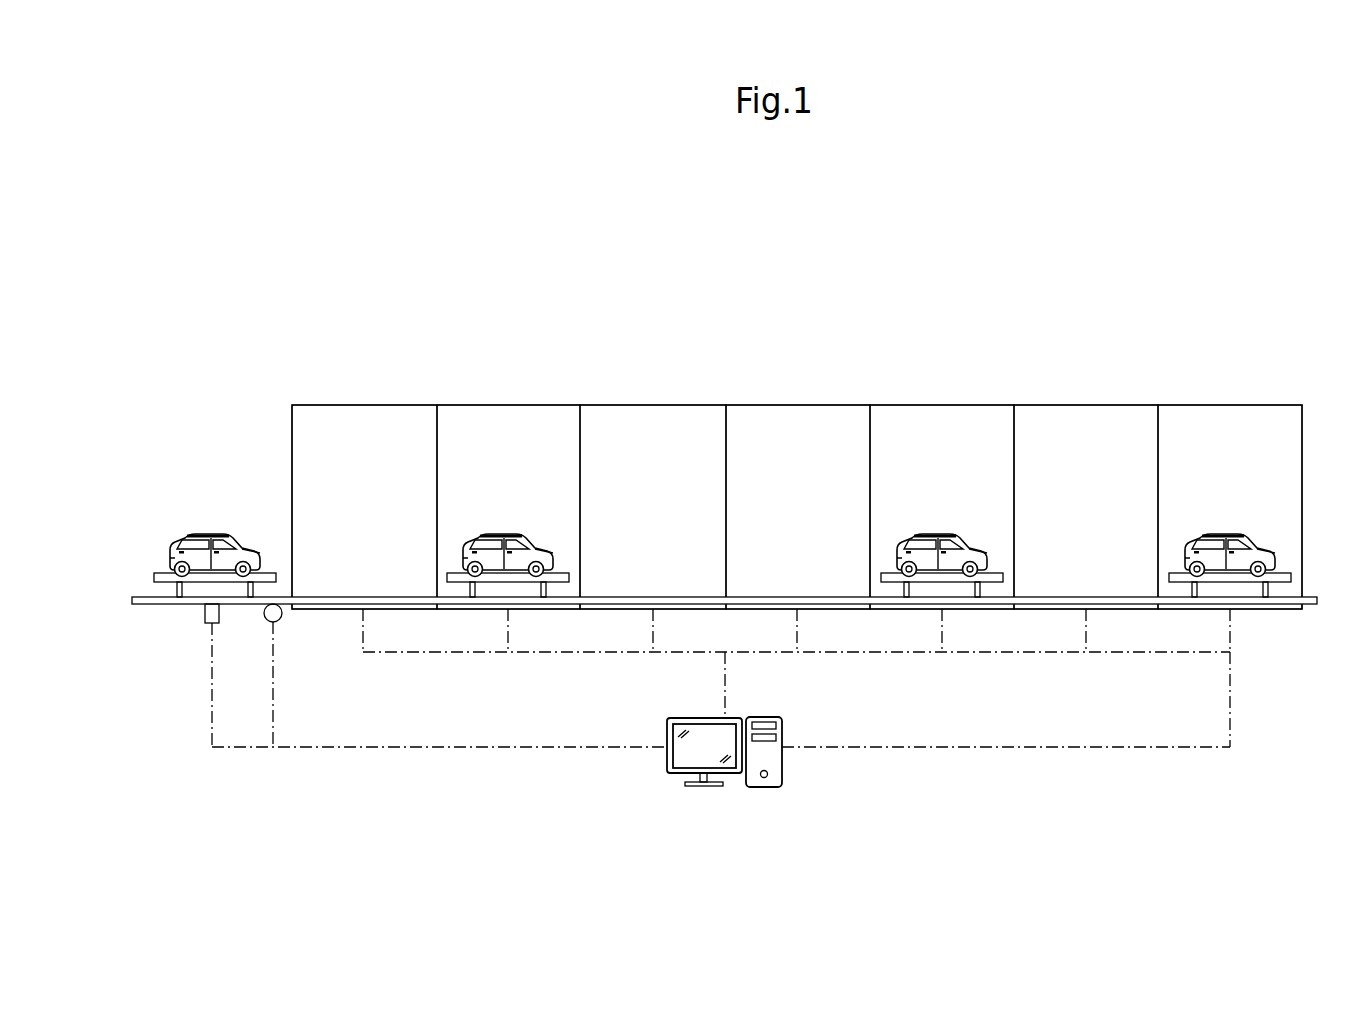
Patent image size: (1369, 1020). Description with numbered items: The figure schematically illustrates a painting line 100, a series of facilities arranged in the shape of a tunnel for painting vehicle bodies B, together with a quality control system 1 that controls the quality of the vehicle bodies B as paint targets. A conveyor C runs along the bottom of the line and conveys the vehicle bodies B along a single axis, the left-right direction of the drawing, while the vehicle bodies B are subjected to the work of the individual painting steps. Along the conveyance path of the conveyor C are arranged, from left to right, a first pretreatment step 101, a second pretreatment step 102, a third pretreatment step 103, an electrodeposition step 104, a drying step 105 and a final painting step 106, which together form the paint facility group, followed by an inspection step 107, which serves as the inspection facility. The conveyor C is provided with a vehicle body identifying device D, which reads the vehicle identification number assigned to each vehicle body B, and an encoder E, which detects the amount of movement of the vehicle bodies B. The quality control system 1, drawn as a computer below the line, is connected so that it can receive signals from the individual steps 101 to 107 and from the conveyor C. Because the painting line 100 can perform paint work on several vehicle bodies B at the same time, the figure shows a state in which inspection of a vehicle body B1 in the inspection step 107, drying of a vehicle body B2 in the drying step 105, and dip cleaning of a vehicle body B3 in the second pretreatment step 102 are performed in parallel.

The painting line 100 is at (1168, 318).
The first pretreatment step 101 is at (339, 455).
The second pretreatment step 102 is at (483, 455).
The third pretreatment step 103 is at (628, 455).
The electrodeposition step 104 is at (773, 455).
The drying step 105 is at (917, 455).
The final painting step 106 is at (1061, 455).
The inspection step 107 is at (1205, 455).
The quality control system 1 is at (782, 723).
The vehicle body B is at (207, 535).
The vehicle body B1 is at (1213, 535).
The vehicle body B2 is at (926, 535).
The vehicle body B3 is at (494, 535).
The conveyor C is at (148, 598).
The vehicle body identifying device D is at (210, 612).
The encoder E is at (279, 620).